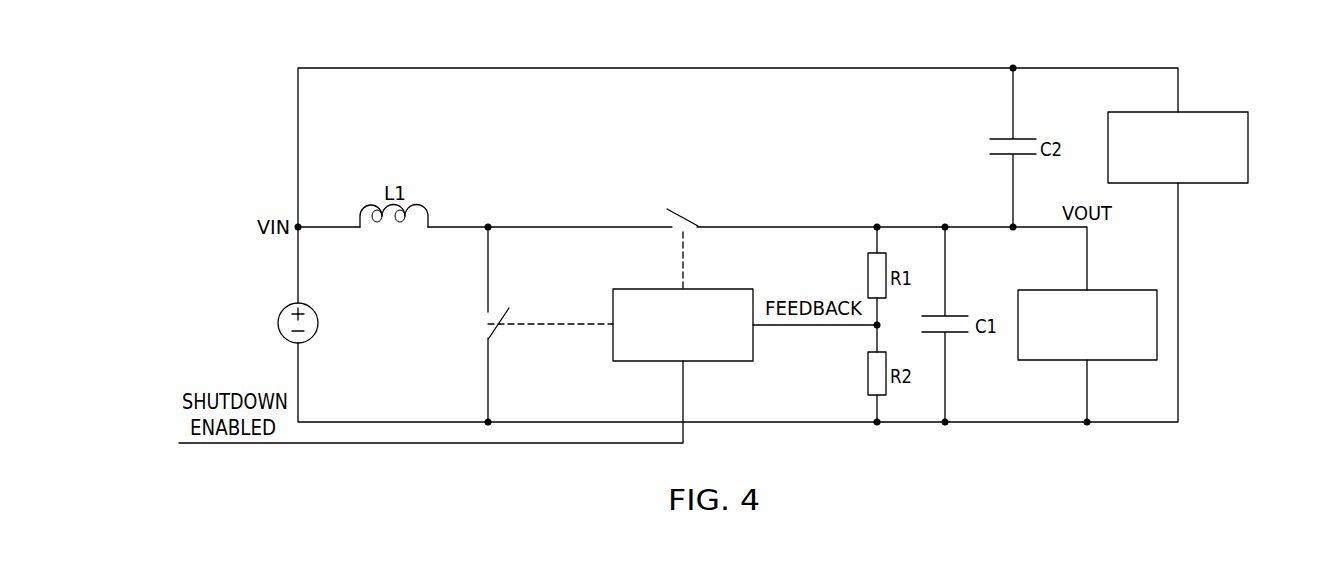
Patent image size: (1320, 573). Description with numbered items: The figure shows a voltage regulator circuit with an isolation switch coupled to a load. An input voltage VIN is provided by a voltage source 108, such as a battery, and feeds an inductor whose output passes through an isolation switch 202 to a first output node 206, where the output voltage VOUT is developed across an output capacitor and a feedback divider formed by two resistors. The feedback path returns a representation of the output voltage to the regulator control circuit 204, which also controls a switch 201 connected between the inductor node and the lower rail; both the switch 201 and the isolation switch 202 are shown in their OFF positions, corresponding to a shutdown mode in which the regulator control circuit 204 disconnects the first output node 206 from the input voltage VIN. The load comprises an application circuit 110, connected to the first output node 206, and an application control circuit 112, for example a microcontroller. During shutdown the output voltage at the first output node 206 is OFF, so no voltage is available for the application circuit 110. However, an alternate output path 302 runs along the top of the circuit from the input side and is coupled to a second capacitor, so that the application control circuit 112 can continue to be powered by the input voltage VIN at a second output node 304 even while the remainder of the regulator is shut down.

The alternate output path 302 is at (265, 44).
The second output node 304 is at (1017, 65).
The voltage source 108 is at (278, 324).
The switch 201 is at (490, 331).
The isolation switch 202 is at (680, 211).
The regulator control circuit 204 is at (706, 289).
The first output node 206 is at (880, 223).
The application circuit 110 is at (1108, 289).
The application control circuit 112 is at (1200, 111).